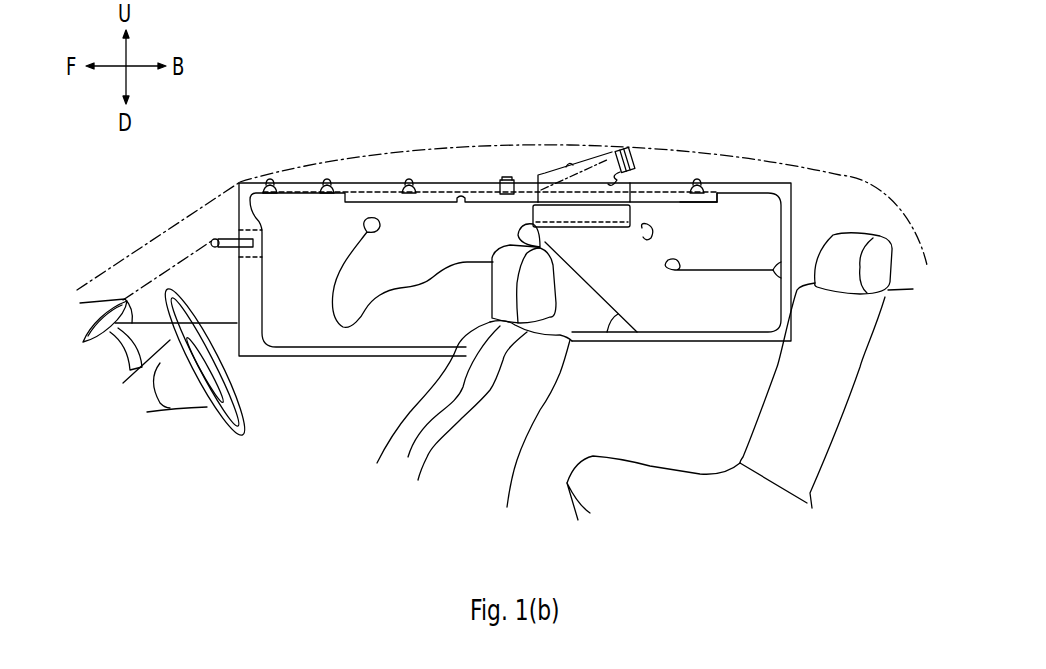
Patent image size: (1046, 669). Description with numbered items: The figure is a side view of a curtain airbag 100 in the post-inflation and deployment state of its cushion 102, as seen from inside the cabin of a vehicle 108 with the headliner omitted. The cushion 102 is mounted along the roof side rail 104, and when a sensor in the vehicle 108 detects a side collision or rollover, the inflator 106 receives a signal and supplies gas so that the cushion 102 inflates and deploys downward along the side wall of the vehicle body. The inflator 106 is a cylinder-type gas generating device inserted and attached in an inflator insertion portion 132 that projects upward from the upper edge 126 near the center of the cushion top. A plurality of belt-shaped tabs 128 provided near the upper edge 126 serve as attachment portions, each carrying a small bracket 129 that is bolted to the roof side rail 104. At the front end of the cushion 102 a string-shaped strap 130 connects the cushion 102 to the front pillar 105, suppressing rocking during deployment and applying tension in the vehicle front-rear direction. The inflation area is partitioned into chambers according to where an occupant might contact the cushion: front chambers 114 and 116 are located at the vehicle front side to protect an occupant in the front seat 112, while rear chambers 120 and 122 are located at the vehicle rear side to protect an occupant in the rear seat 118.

The curtain airbag 100 is at (417, 171).
The cushion 102 is at (475, 185).
The roof side rail 104 is at (743, 170).
The front pillar 105 is at (197, 213).
The inflator 106 is at (643, 152).
The vehicle 108 is at (842, 175).
The front seat 112 is at (470, 478).
The front chamber 114 is at (290, 297).
The front chamber 116 is at (360, 302).
The rear seat 118 is at (795, 478).
The rear chamber 120 is at (687, 302).
The rear chamber 122 is at (728, 255).
The upper edge 126 is at (433, 183).
The tab 128 is at (707, 187).
The bracket 129 is at (697, 180).
The strap 130 is at (233, 237).
The inflator insertion portion 132 is at (558, 183).